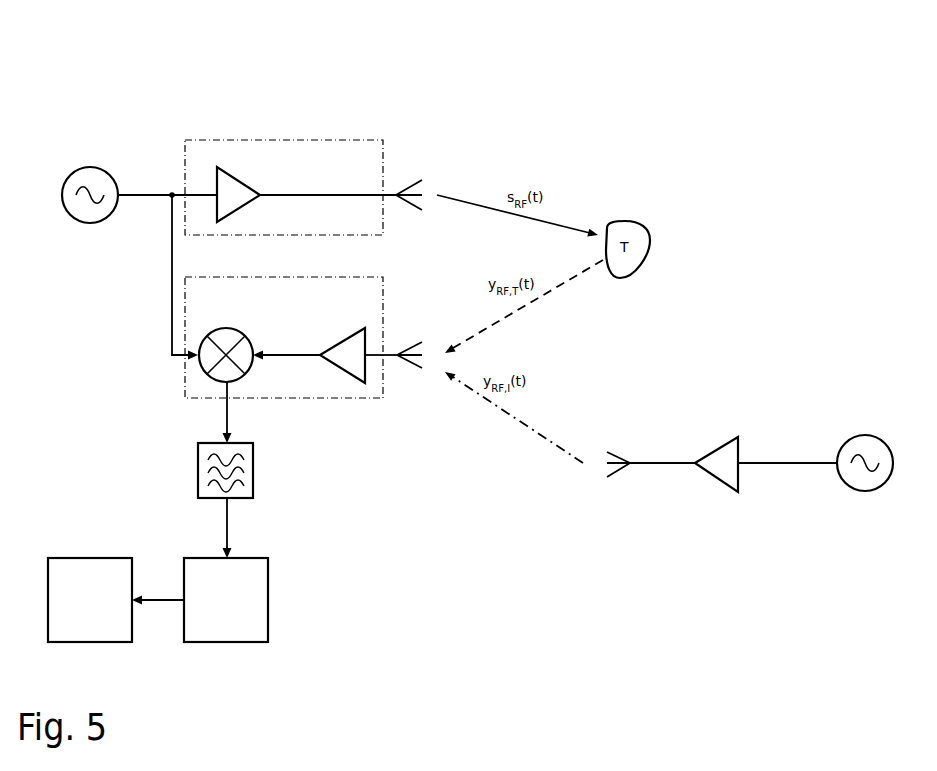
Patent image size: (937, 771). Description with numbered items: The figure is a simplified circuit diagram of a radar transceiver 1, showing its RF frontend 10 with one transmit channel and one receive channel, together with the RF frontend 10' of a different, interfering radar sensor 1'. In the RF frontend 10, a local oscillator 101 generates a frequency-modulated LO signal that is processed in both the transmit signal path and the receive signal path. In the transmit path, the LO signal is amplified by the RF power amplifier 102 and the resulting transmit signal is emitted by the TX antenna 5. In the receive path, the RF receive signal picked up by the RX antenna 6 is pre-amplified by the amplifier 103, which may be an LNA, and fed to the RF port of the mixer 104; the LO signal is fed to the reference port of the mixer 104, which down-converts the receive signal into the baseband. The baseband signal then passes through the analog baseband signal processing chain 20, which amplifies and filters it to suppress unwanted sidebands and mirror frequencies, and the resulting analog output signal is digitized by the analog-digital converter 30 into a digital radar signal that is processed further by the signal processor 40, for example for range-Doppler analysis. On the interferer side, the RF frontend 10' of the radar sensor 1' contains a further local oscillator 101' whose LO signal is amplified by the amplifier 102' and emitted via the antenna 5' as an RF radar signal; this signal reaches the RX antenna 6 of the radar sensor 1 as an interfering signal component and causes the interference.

The radar transceiver 1 is at (249, 334).
The RF frontend 10 is at (223, 265).
The local oscillator 101 is at (90, 177).
The RF power amplifier 102 is at (250, 187).
The TX antenna 5 is at (409, 173).
The amplifier 103 is at (342, 327).
The mixer 104 is at (235, 327).
The RX antenna 6 is at (410, 340).
The analog baseband signal processing chain 20 is at (253, 473).
The analog-digital converter 30 is at (226, 600).
The signal processor 40 is at (90, 600).
The radar sensor 1' is at (764, 403).
The RF frontend 10' is at (764, 403).
The antenna 5' is at (618, 444).
The amplifier 102' is at (720, 444).
The further local oscillator 101' is at (867, 443).